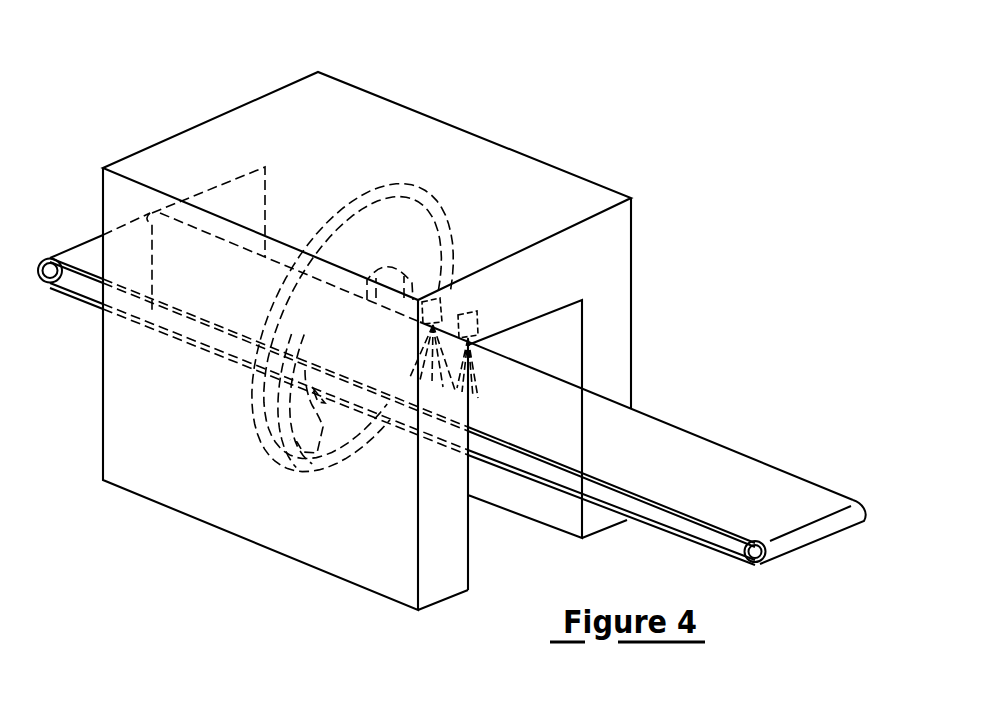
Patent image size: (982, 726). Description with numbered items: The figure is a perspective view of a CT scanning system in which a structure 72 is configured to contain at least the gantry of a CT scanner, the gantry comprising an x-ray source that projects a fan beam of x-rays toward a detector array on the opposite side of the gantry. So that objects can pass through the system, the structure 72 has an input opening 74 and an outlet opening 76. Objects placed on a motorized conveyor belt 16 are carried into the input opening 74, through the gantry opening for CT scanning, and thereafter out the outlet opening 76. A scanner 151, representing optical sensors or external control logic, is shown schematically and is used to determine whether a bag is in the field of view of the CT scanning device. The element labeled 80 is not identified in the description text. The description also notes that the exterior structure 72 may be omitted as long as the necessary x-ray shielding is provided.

The motorized conveyor belt 16 is at (795, 498).
The structure 72 is at (393, 130).
The input opening 74 is at (578, 331).
The outlet opening 76 is at (207, 193).
The X-ray source 80 is at (433, 300).
The scanner 151 is at (472, 312).